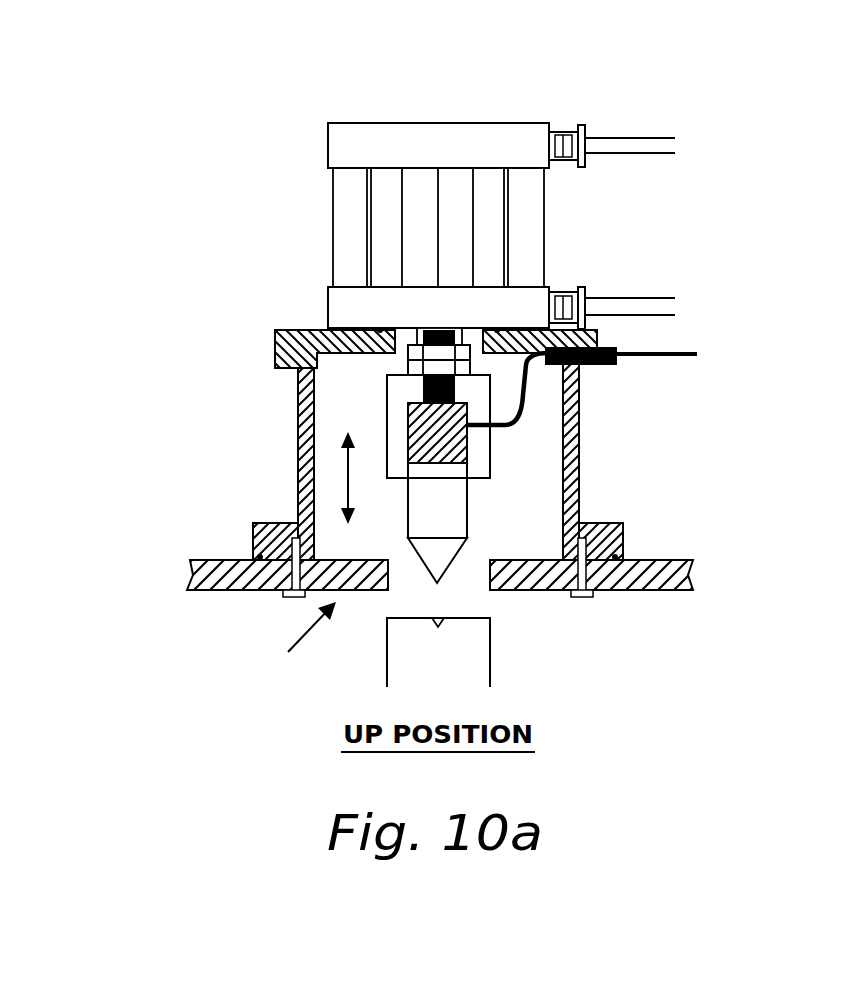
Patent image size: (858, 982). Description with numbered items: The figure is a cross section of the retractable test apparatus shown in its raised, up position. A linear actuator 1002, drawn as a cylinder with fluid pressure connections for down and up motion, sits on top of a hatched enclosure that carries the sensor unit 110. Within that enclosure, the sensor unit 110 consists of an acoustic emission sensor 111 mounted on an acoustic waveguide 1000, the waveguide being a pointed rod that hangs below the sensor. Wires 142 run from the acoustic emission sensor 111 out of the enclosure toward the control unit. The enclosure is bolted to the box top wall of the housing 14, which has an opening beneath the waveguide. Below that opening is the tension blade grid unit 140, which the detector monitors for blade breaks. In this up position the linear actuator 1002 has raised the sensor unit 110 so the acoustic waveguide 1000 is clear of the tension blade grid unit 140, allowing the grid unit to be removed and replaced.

The linear actuator 1002 is at (300, 235).
The sensor unit 110 is at (346, 404).
The acoustic emission sensor 111 is at (470, 447).
The acoustic waveguide 1000 is at (470, 517).
The wires 142 is at (670, 350).
The housing 14 is at (667, 558).
The tension blade grid unit 140 is at (490, 662).